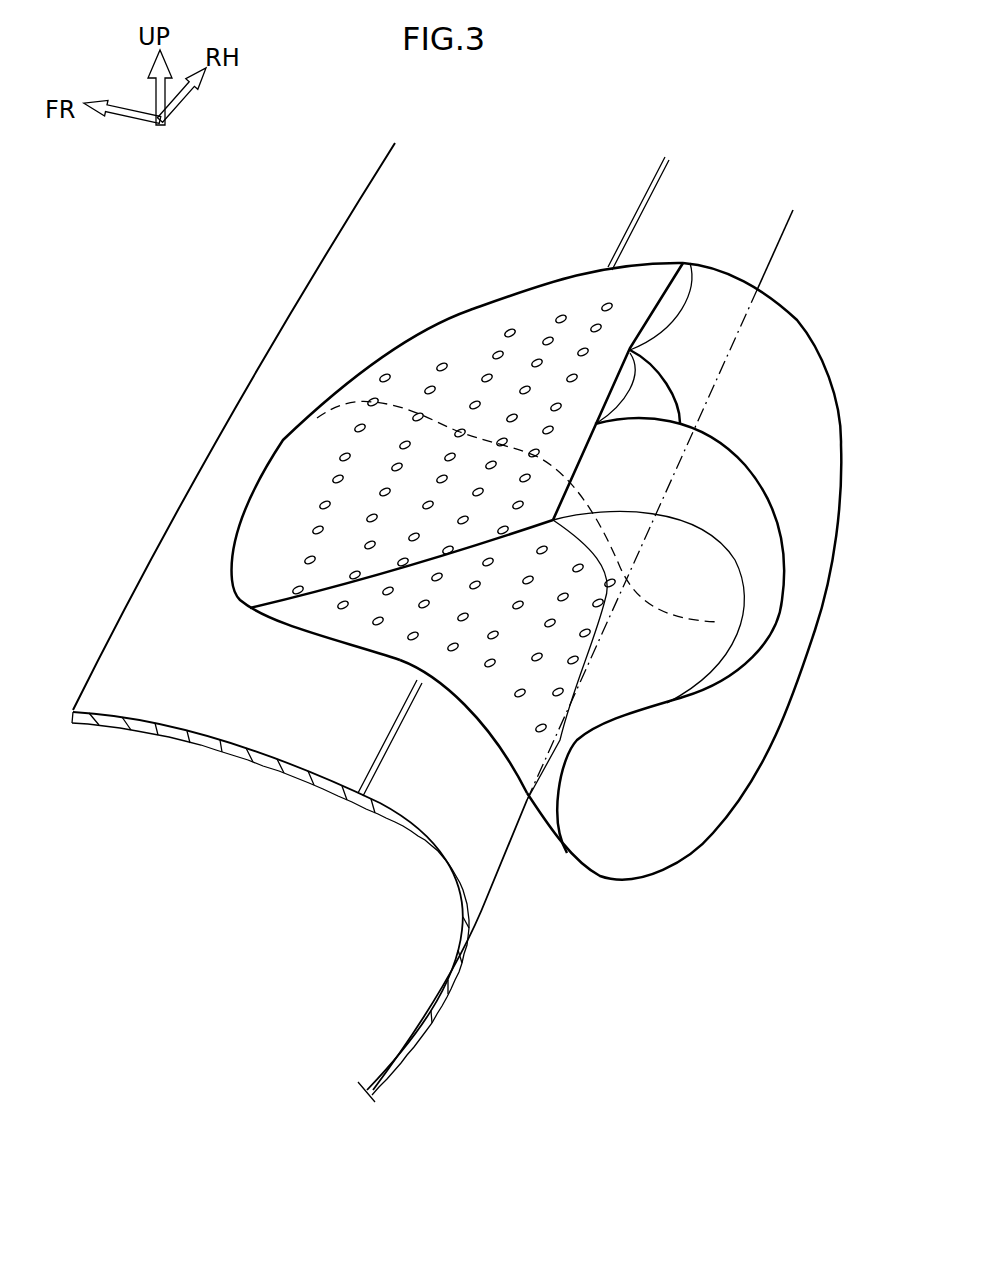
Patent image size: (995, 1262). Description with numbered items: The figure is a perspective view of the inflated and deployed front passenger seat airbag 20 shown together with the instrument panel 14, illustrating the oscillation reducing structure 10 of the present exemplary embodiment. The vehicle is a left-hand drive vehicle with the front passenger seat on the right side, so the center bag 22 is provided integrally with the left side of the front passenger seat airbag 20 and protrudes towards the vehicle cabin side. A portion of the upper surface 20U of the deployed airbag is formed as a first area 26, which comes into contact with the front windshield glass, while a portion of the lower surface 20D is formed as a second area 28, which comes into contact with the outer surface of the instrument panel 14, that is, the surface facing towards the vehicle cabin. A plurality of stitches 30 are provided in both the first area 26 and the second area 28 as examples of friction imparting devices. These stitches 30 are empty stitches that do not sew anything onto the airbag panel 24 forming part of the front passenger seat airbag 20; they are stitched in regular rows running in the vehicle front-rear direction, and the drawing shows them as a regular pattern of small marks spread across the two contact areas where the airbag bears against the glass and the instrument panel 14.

The oscillation reducing structure 10 is at (477, 293).
The instrument panel 14 is at (490, 900).
The front passenger seat airbag 20 is at (797, 320).
The upper surface 20U is at (680, 283).
The lower surface 20D is at (532, 815).
The center bag 22 is at (763, 577).
The airbag panel 24 is at (543, 303).
The first area 26 is at (470, 347).
The second area 28 is at (477, 672).
The stitches 30 is at (442, 367).